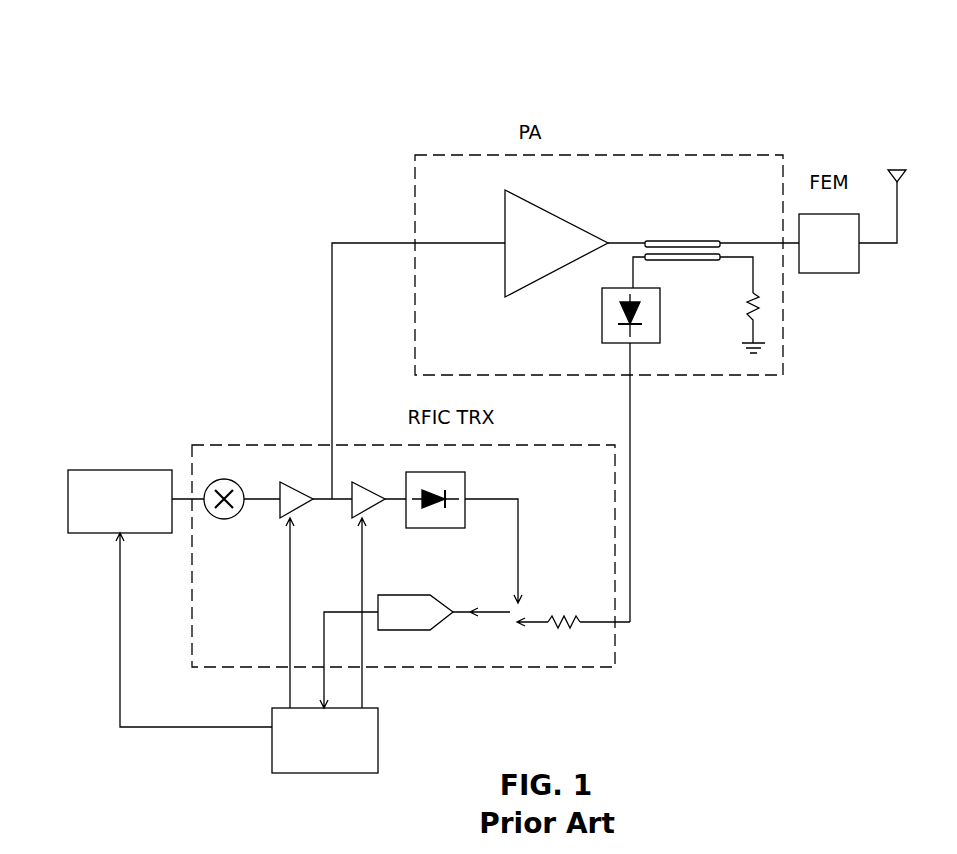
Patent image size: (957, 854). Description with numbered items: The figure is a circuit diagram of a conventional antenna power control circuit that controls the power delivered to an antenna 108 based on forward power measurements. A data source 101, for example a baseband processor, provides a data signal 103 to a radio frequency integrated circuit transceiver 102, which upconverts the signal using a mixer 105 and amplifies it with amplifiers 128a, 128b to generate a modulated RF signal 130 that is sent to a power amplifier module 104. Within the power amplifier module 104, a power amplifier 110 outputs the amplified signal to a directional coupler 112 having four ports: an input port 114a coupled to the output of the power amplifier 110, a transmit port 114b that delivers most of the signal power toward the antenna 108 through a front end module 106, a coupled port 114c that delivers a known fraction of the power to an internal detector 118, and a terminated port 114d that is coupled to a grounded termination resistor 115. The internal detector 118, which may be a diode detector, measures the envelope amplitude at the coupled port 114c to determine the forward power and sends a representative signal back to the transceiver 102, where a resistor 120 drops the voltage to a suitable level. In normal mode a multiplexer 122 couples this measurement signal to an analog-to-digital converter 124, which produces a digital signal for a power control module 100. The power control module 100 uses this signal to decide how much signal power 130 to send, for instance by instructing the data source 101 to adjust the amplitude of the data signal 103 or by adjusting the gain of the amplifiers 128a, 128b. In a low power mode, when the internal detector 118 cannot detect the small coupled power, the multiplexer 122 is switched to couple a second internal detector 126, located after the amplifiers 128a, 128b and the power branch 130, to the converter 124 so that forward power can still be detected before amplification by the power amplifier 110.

The power control module 100 is at (272, 735).
The data source 101 is at (108, 470).
The radio frequency integrated circuit transceiver 102 is at (264, 445).
The data signal 103 is at (258, 499).
The power amplifier module 104 is at (628, 155).
The mixer 105 is at (214, 519).
The front end module 106 is at (826, 273).
The antenna 108 is at (897, 170).
The power amplifier 110 is at (505, 205).
The directional coupler 112 is at (685, 241).
The input port 114a is at (630, 228).
The transmit port 114b is at (732, 230).
The coupled port 114c is at (633, 262).
The terminated port 114d is at (716, 272).
The termination resistor 115 is at (760, 308).
The internal detector 118 is at (664, 345).
The resistor 120 is at (566, 628).
The multiplexer 122 is at (515, 628).
The analog-to-digital converter 124 is at (410, 632).
The internal detector 126 is at (466, 475).
The amplifier 128a is at (288, 514).
The amplifier 128b is at (364, 518).
The modulated RF signal 130 is at (329, 312).